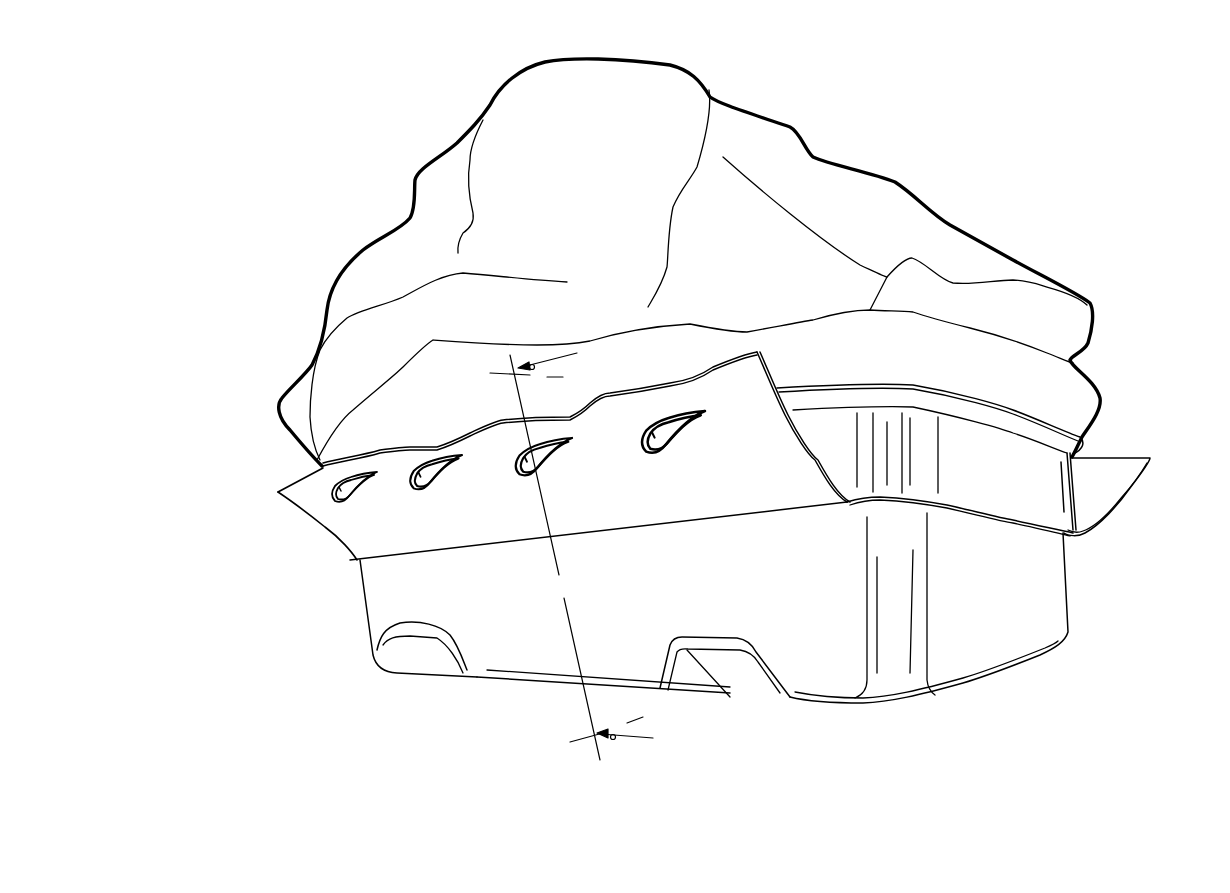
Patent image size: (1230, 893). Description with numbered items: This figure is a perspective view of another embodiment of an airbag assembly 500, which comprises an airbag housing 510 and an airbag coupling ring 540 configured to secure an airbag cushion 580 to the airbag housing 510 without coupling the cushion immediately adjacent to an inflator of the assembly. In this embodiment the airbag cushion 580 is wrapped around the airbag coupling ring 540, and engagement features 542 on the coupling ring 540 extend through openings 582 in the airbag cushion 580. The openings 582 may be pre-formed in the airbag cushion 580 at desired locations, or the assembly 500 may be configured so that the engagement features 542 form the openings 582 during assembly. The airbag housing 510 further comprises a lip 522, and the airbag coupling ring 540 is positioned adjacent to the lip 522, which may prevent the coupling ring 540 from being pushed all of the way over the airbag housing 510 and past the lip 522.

The airbag assembly 500 is at (880, 102).
The airbag cushion 580 is at (923, 230).
The openings 582 is at (338, 473).
The engagement features 542 is at (340, 502).
The lip 522 is at (1010, 420).
The airbag coupling ring 540 is at (1047, 477).
The airbag housing 510 is at (1020, 622).